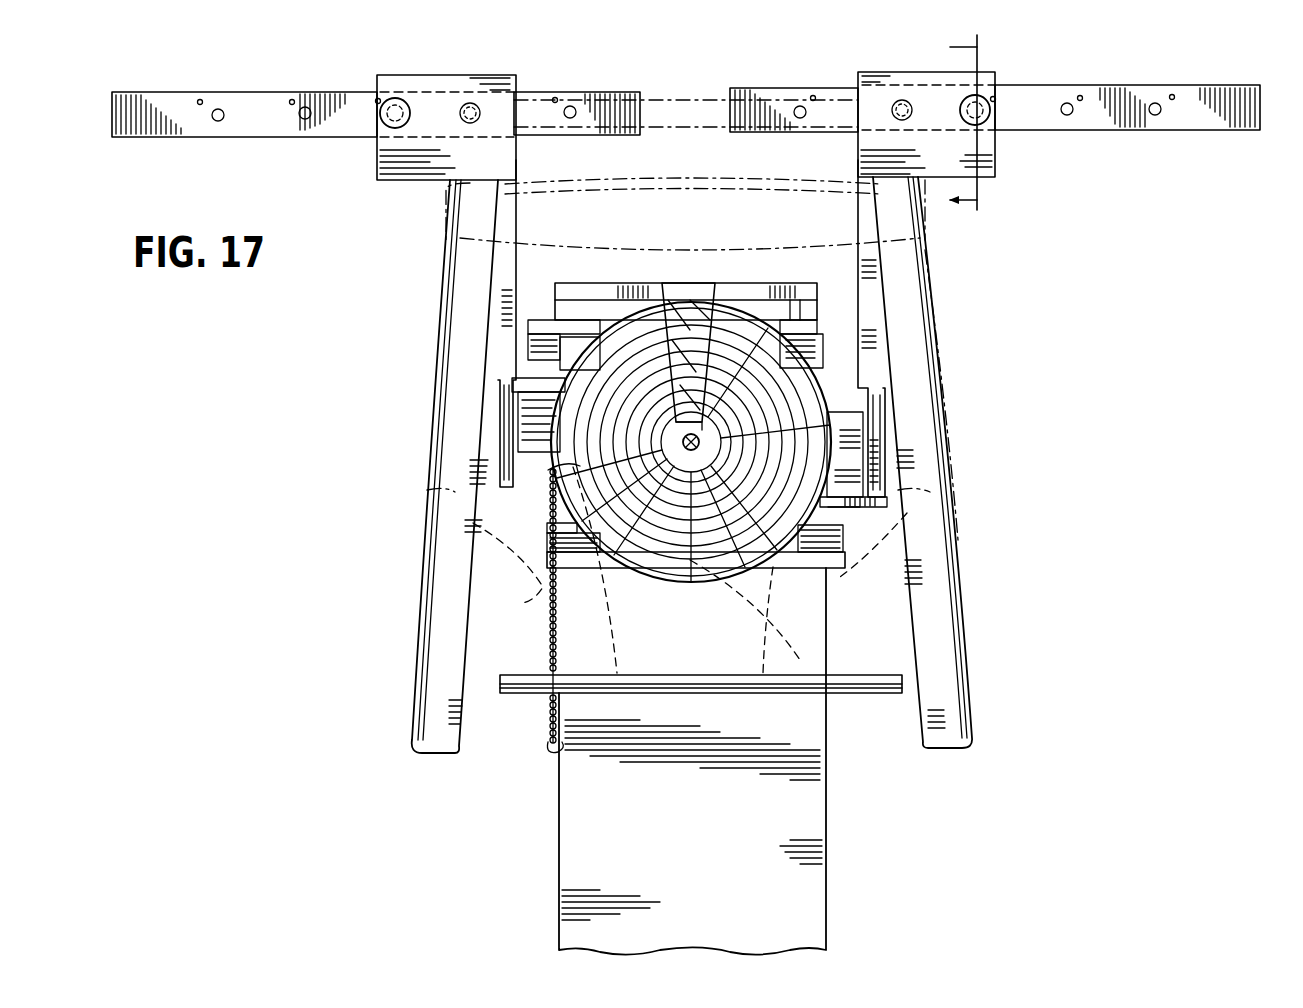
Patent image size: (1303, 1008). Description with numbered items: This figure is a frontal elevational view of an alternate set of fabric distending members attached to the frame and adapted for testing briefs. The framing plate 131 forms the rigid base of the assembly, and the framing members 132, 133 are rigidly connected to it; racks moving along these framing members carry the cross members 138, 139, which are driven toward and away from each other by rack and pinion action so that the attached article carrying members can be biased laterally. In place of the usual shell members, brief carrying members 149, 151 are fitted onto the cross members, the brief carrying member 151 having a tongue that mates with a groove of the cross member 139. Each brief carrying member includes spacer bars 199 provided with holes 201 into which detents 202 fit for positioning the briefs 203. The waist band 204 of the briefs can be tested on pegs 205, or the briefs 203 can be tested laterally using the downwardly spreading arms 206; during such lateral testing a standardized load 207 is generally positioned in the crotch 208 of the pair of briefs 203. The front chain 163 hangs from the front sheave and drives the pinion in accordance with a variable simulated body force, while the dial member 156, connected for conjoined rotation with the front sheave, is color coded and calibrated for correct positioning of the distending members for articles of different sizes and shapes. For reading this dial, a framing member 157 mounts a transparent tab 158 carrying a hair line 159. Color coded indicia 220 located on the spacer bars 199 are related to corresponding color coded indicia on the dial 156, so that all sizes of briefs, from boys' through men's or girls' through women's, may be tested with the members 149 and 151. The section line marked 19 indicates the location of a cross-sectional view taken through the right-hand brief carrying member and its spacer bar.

The section line 19- 19 is at (988, 124).
The framing plate 131 is at (826, 806).
The framing member 132 is at (545, 326).
The framing member 133 is at (840, 560).
The cross member 138 is at (542, 378).
The cross member 139 is at (860, 514).
The brief carrying member 149 is at (425, 72).
The brief carrying member 151 is at (890, 70).
The dial member 156 is at (580, 466).
The framing member 157 is at (798, 286).
The transparent tab 158 is at (718, 302).
The hair line 159 is at (688, 303).
The front chain 163 is at (550, 707).
The spacer bar 199 is at (165, 125).
The hole 201 is at (302, 108).
The detent 202 is at (385, 122).
The briefs 203 is at (958, 442).
The waist band 204 is at (685, 96).
The peg 205 is at (470, 123).
The downwardly spreading arm 206 is at (440, 592).
The standardized load 207 is at (860, 693).
The crotch 208 is at (540, 590).
The color coded indicia 220 is at (200, 100).